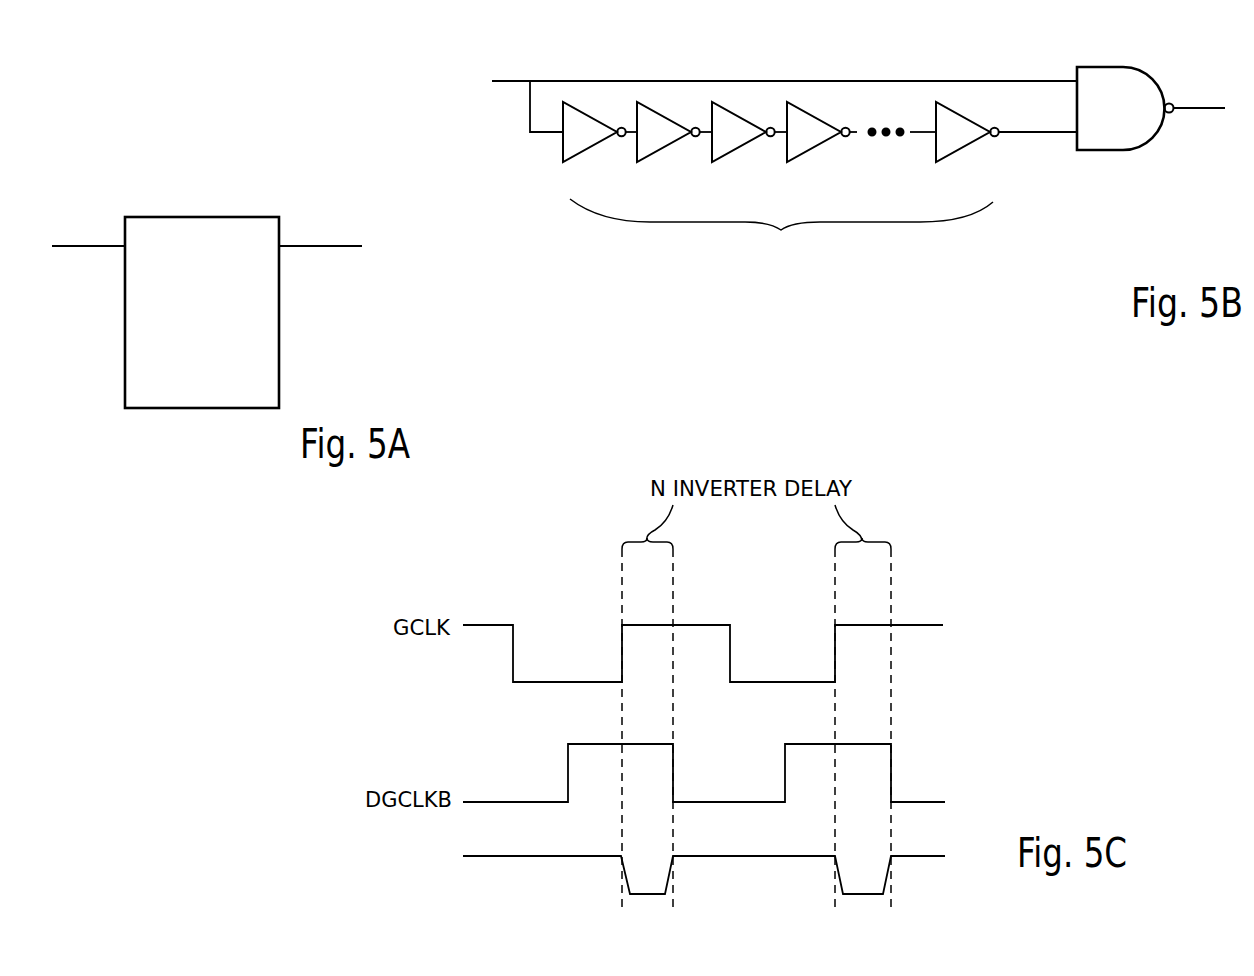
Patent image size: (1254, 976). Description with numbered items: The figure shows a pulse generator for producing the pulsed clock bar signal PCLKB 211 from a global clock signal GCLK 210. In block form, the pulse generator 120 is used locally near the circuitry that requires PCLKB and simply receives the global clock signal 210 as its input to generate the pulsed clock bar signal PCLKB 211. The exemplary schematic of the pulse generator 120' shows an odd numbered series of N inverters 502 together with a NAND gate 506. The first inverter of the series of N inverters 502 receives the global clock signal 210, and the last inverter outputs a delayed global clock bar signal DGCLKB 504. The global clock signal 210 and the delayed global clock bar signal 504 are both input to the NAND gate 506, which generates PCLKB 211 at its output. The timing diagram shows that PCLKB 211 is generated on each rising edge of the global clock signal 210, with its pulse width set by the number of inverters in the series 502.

In FIG. 5A, the pulse generator 120 is at (202, 312).
In FIG. 5B, the exemplary pulse generator 120' is at (855, 161).
In FIG. 5A, the global clock signal 210 is at (101, 248).
In FIG. 5B, the global clock signal 210 is at (508, 84).
In FIG. 5A, the pulsed clock bar signal PCLKB 211 is at (290, 248).
In FIG. 5B, the pulsed clock bar signal PCLKB 211 is at (1202, 110).
In FIG. 5C, the pulsed clock bar signal PCLKB 211 is at (475, 858).
In FIG. 5B, the odd numbered series of N inverters 502 is at (781, 206).
In FIG. 5B, the delayed global clock bar signal 504 is at (1022, 134).
In FIG. 5B, the NAND gate 506 is at (1136, 120).